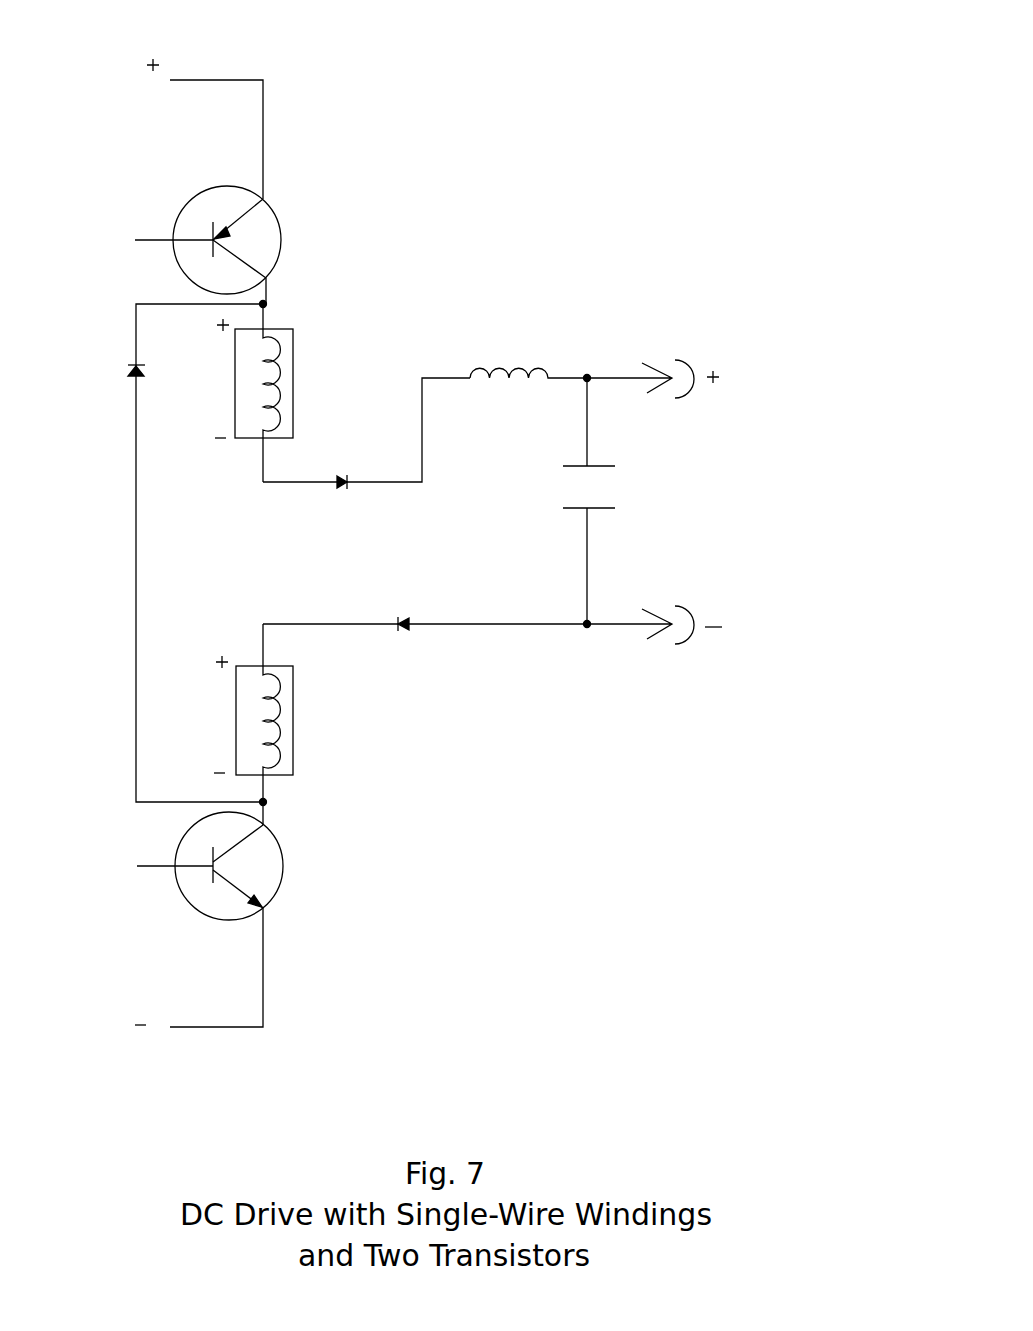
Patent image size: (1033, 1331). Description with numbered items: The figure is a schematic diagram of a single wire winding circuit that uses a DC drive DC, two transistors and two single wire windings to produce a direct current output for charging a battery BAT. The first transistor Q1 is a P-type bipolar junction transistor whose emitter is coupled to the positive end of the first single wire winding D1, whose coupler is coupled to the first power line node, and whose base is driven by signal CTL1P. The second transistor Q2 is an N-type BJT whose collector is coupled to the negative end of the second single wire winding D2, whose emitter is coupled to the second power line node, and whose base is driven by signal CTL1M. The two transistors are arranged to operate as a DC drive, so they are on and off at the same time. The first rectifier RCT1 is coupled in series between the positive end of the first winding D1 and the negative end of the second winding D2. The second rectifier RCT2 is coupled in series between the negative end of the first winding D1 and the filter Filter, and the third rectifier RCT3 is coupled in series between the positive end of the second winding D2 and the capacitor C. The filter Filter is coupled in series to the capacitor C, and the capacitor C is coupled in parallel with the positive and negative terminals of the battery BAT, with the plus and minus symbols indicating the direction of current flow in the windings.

The DC drive DC is at (198, 515).
The first transistor Q1 is at (248, 245).
The second transistor Q2 is at (247, 866).
The control signal CTL1P is at (131, 240).
The control signal CTL1M is at (128, 867).
The first rectifier RCT1 is at (158, 553).
The second rectifier RCT2 is at (366, 451).
The third rectifier RCT3 is at (425, 642).
The first single wire winding D1 is at (272, 393).
The second single wire winding D2 is at (273, 724).
The filter Filter is at (528, 352).
The capacitor C is at (570, 501).
The battery BAT is at (695, 502).